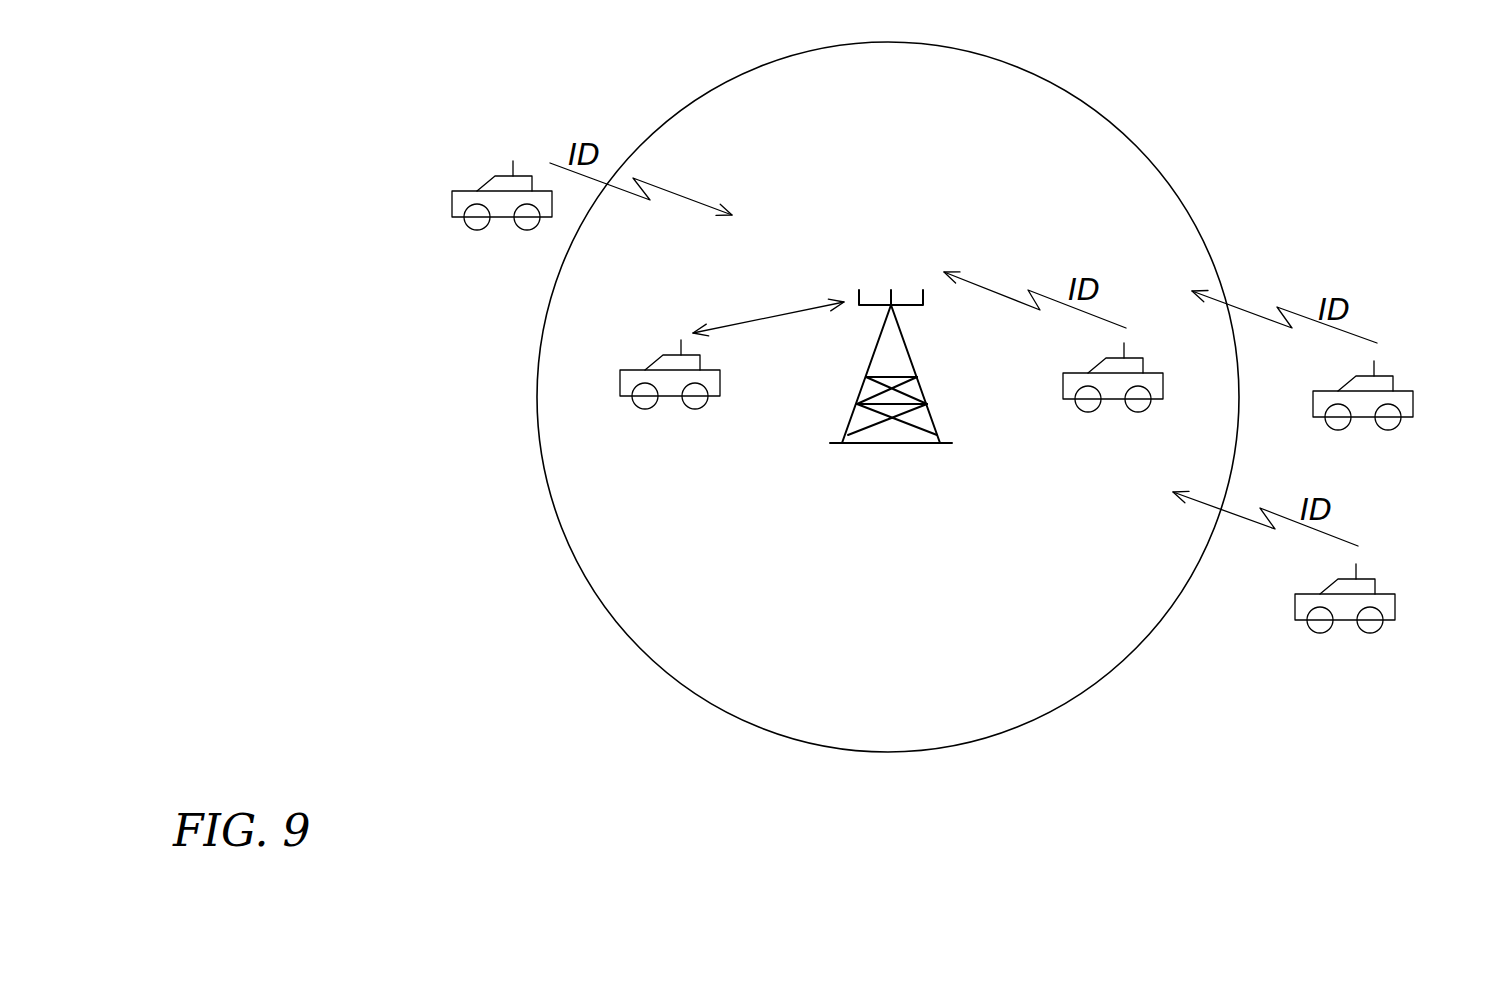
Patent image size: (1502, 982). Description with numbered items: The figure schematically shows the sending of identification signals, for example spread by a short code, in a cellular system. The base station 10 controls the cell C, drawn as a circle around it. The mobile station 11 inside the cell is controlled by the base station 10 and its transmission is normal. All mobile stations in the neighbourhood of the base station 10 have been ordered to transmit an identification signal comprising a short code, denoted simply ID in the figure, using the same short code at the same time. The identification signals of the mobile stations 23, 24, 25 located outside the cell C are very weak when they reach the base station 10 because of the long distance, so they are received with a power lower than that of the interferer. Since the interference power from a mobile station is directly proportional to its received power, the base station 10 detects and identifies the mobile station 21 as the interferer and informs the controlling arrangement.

The base station 10 is at (871, 446).
The mobile station 11 is at (668, 398).
The mobile station 21 is at (1113, 401).
The mobile station 23 is at (1343, 621).
The mobile station 24 is at (1413, 398).
The mobile station 25 is at (460, 190).
The cell C is at (1162, 177).